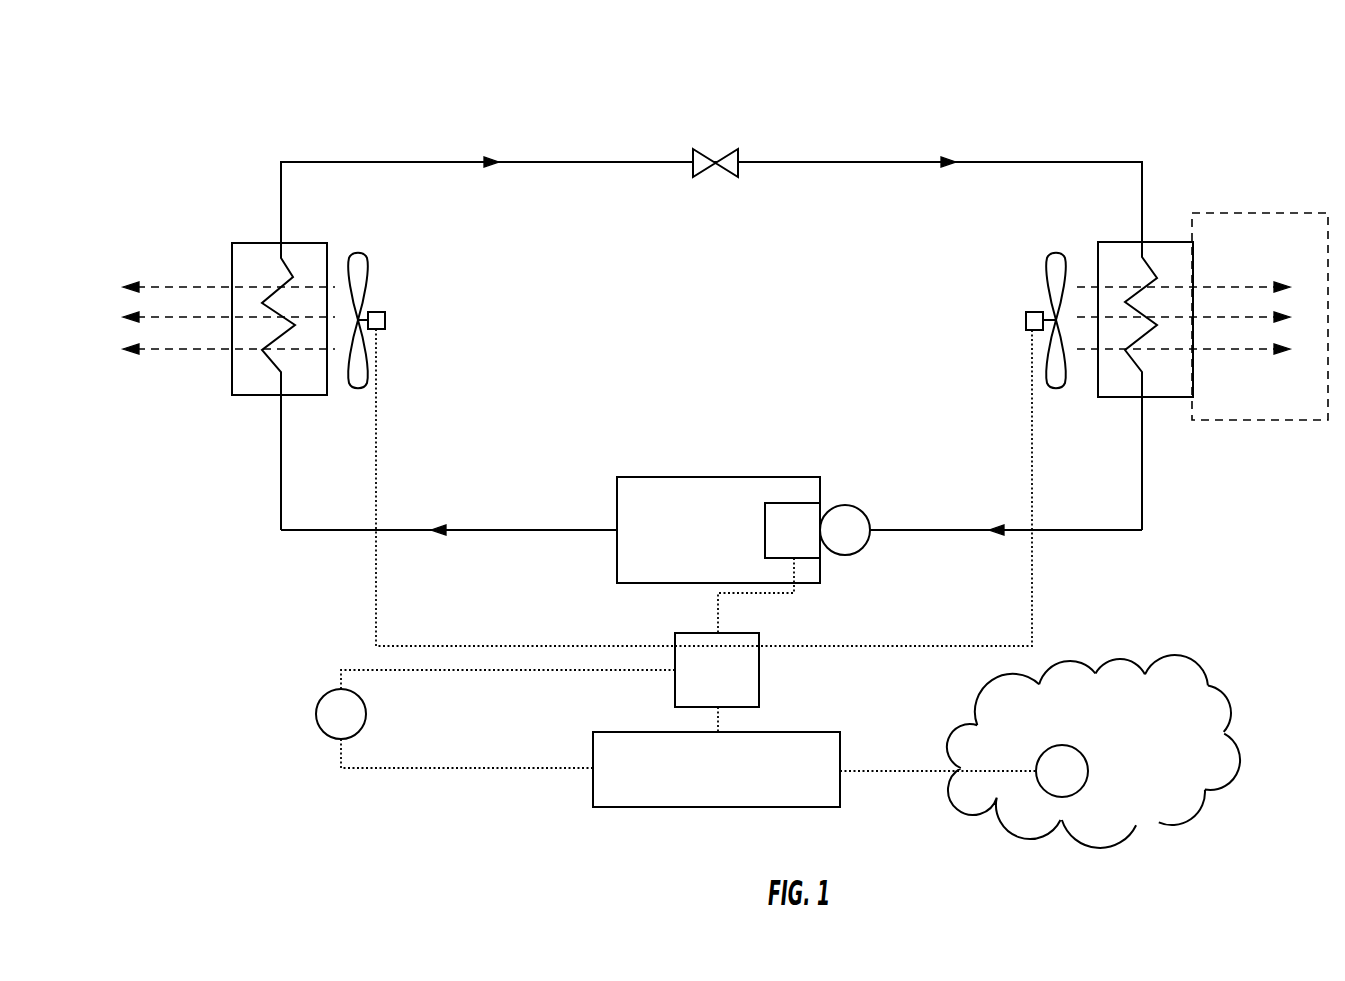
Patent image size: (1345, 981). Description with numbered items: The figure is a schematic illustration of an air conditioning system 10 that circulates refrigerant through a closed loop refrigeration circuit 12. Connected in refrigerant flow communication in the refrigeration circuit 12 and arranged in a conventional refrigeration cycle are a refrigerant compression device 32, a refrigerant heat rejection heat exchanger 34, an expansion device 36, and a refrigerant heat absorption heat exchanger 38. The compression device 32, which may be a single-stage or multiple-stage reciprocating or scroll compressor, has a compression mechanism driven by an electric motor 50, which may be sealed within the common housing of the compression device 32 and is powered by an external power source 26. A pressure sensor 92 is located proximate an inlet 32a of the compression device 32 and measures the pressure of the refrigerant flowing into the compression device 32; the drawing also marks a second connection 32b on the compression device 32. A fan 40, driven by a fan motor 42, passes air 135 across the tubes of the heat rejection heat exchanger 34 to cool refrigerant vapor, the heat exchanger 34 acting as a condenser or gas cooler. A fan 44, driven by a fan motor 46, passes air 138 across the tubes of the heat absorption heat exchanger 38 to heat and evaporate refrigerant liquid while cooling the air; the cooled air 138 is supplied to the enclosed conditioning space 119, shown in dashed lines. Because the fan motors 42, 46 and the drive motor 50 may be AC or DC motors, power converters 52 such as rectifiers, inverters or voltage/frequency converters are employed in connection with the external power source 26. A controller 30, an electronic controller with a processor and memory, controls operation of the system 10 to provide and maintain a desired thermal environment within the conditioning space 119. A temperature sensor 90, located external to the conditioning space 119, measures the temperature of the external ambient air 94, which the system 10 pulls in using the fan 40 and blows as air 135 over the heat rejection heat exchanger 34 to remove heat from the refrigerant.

The air conditioning system 10 is at (203, 134).
The refrigeration circuit 12 is at (595, 161).
The external power source 26 is at (316, 714).
The controller 30 is at (840, 790).
The refrigerant compression device 32 is at (617, 563).
The inlet 32a is at (821, 530).
The compressor inlet 32b is at (616, 529).
The refrigerant heat rejection heat exchanger 34 is at (282, 262).
The expansion device 36 is at (740, 170).
The refrigerant heat absorption heat exchanger 38 is at (1140, 258).
The fan 40 is at (364, 283).
The fan motor 42 is at (386, 320).
The fan 44 is at (1048, 287).
The fan motor 46 is at (1025, 321).
The electric motor 50 is at (764, 527).
The power converter 52 is at (760, 653).
The temperature sensor 90 is at (1089, 771).
The pressure sensor 92 is at (862, 545).
The external ambient air 94 is at (1198, 805).
The enclosed conditioning space 119 is at (1225, 422).
The air 135 is at (221, 352).
The air 138 is at (1205, 352).